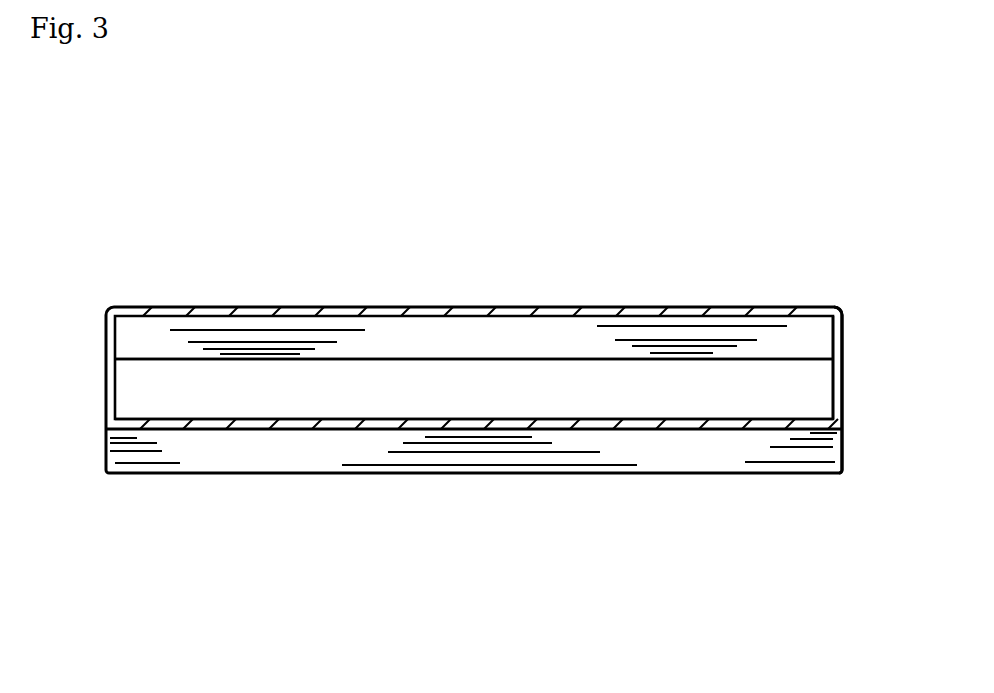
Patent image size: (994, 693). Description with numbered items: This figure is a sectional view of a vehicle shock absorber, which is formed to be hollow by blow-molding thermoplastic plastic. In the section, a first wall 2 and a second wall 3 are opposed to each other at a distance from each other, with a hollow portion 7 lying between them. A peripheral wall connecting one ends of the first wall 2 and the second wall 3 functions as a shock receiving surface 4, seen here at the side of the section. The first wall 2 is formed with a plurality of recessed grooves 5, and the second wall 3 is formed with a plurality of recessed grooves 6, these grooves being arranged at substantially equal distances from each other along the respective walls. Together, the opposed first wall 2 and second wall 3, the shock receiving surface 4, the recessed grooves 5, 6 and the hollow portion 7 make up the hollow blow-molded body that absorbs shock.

The first wall 2 is at (589, 294).
The second wall 3 is at (657, 487).
The shock receiving surface 4 is at (843, 373).
The recessed grooves 5 is at (467, 327).
The recessed grooves 6 is at (265, 468).
The hollow portion 7 is at (686, 379).